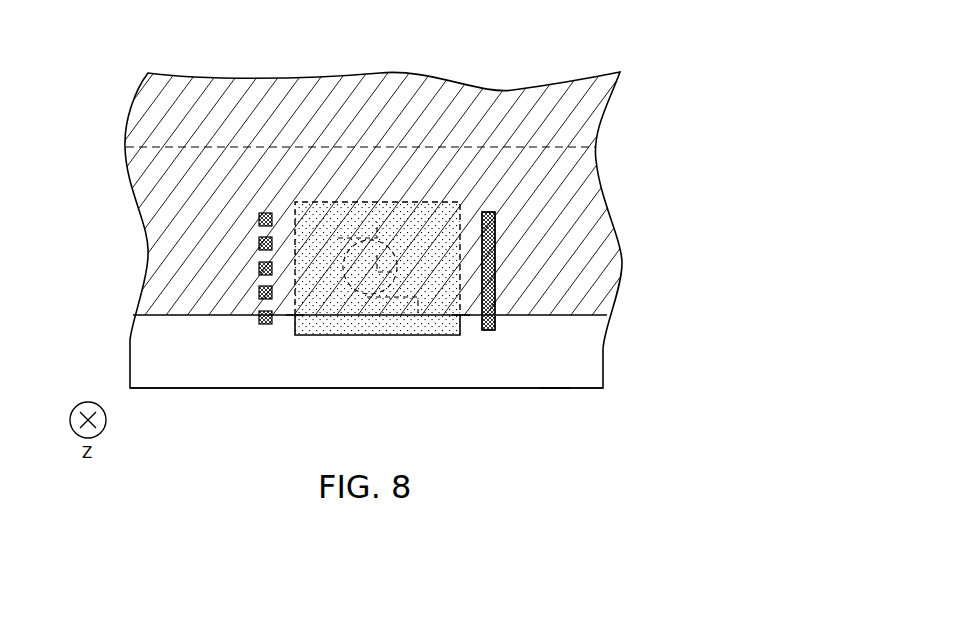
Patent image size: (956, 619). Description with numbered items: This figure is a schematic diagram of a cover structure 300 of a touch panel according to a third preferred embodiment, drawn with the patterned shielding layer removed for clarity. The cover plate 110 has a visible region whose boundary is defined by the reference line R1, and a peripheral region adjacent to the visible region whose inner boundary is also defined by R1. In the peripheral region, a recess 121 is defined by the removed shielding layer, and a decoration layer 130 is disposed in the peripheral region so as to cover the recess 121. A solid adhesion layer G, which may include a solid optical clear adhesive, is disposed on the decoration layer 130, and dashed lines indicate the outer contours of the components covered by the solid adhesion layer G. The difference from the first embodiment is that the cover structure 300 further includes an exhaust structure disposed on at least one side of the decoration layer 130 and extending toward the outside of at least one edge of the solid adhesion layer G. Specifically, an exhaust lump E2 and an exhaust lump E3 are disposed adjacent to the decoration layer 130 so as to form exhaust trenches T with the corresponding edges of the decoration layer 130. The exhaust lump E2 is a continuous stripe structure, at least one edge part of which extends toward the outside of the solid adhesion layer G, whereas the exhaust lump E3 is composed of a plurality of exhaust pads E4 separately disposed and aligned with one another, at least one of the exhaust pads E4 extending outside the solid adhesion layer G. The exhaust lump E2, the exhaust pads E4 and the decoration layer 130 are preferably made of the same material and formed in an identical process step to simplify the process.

The cover structure 300 is at (664, 60).
The cover plate 110 is at (410, 388).
The boundary of the visible region R1 is at (593, 148).
The decoration layer 130 is at (462, 210).
The recess 121 is at (497, 224).
The exhaust lump E2 is at (497, 289).
The exhaust lump E3 is at (103, 196).
The exhaust pads E4 is at (258, 219).
The exhaust trenches T is at (288, 320).
The solid adhesion layer G is at (555, 388).